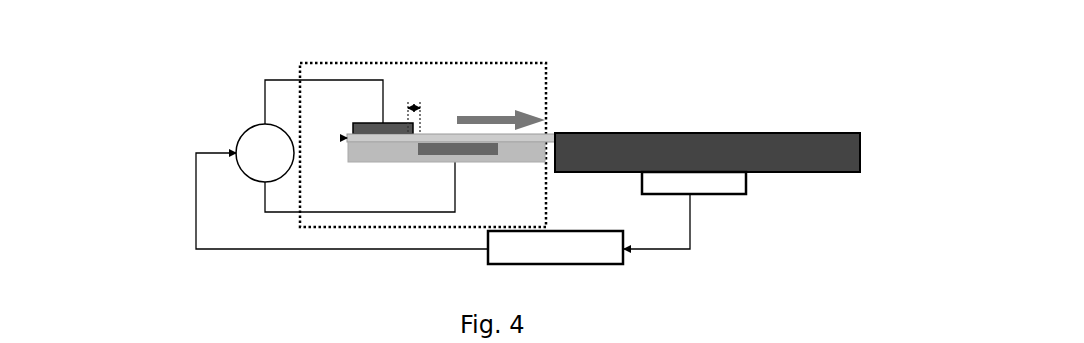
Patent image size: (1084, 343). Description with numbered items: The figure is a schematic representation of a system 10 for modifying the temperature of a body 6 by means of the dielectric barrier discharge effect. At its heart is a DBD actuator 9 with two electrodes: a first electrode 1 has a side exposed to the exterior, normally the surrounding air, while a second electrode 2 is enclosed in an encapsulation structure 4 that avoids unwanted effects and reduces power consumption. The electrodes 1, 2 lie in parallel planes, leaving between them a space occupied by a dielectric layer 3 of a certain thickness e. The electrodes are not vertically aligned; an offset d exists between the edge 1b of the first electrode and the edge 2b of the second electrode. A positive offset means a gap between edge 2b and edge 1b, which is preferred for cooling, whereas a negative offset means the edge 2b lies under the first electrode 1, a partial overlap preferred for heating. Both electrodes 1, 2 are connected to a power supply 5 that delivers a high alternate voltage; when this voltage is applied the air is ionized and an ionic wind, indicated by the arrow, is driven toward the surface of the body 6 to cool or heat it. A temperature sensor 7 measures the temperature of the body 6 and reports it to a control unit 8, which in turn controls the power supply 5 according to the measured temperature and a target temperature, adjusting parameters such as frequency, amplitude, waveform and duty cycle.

The first electrode 1 is at (352, 126).
The edge of the first electrode 1b is at (418, 131).
The second electrode 2 is at (500, 152).
The edge of the second electrode 2b is at (417, 147).
The dielectric layer 3 is at (548, 131).
The encapsulation structure 4 is at (462, 162).
The power supply 5 is at (240, 136).
The body 6 is at (860, 133).
The temperature sensor 7 is at (733, 183).
The control unit 8 is at (607, 257).
The DBD actuator 9 is at (352, 62).
The system 10 is at (622, 103).